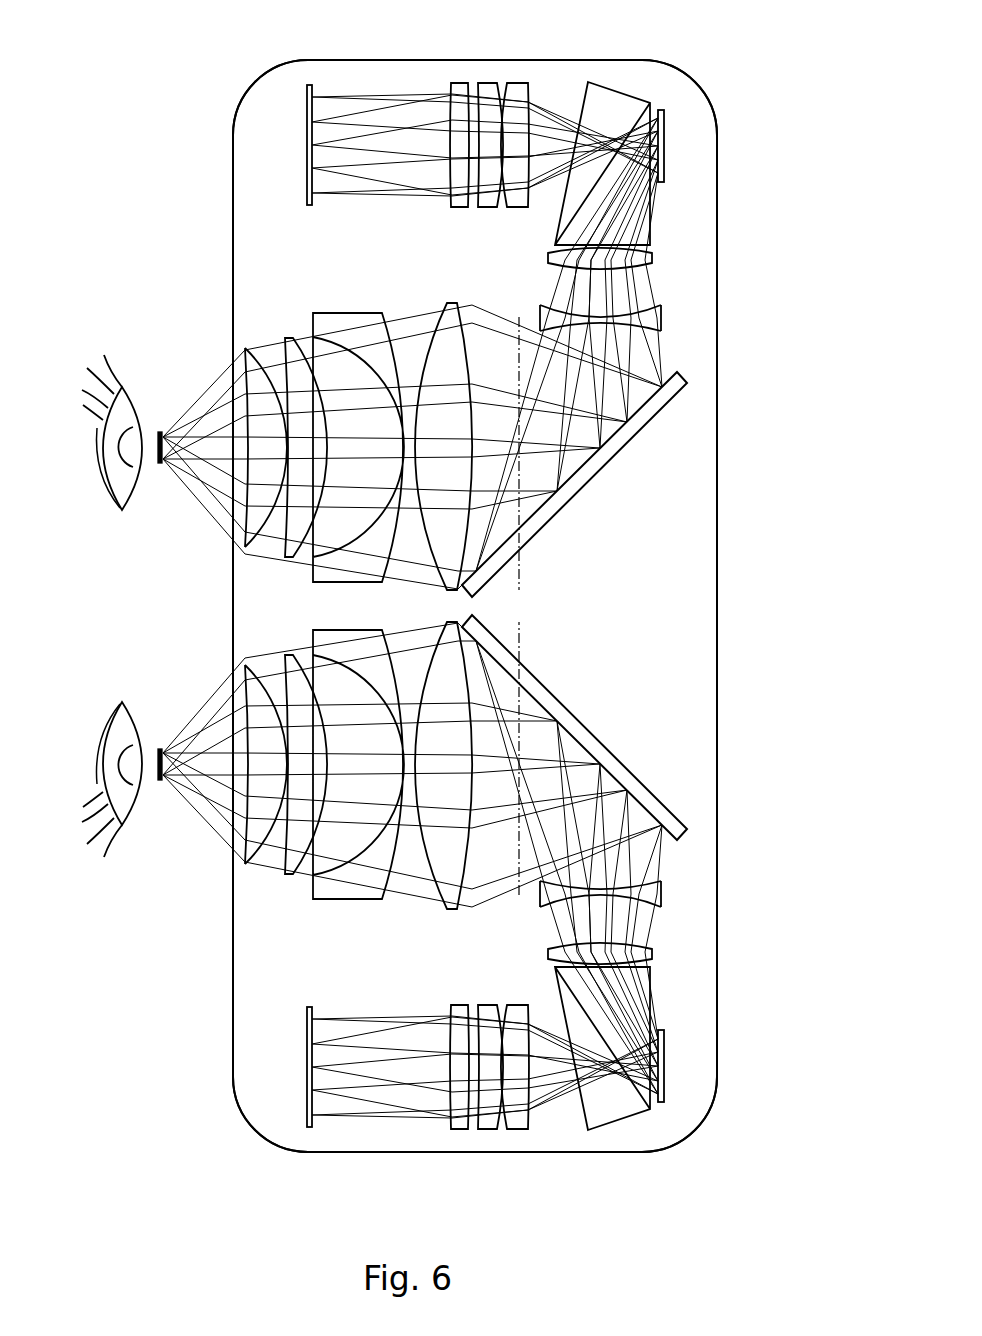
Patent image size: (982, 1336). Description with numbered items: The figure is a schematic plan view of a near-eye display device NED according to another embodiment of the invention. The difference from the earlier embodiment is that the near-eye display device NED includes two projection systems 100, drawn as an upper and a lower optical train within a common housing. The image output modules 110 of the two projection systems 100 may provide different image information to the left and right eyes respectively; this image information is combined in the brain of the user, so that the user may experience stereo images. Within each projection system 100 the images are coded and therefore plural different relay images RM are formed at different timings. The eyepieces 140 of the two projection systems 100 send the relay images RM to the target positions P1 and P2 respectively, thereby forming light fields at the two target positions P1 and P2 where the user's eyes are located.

The near-eye display device NED is at (82, 27).
The projection system 100 is at (263, 275).
The image output module 110 is at (335, 207).
The eyepiece 140 is at (477, 305).
The relay image RM is at (520, 578).
The target position P1 is at (155, 782).
The target position P2 is at (155, 430).